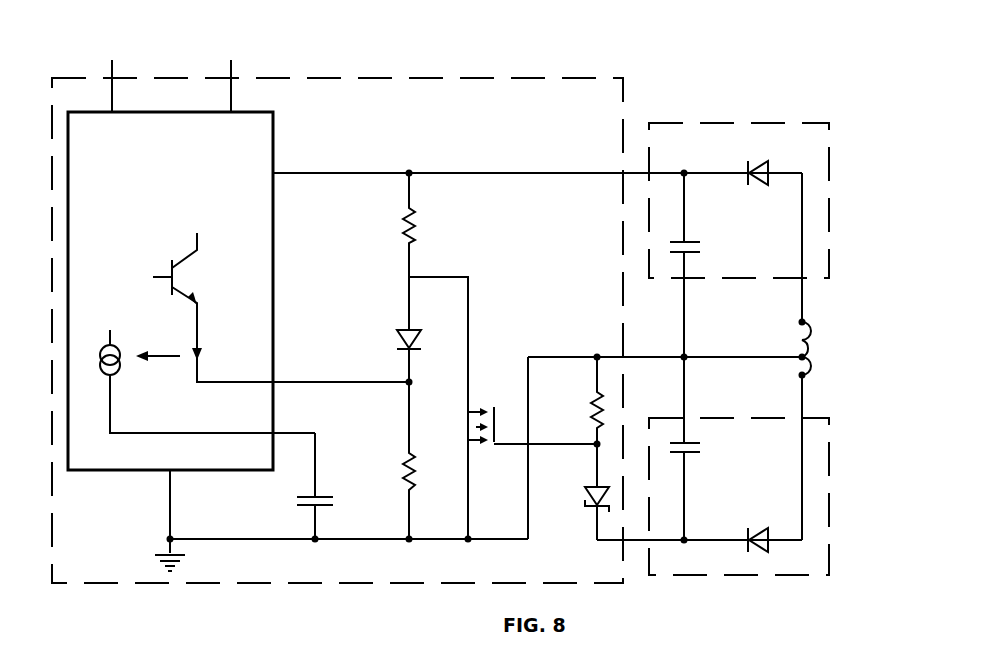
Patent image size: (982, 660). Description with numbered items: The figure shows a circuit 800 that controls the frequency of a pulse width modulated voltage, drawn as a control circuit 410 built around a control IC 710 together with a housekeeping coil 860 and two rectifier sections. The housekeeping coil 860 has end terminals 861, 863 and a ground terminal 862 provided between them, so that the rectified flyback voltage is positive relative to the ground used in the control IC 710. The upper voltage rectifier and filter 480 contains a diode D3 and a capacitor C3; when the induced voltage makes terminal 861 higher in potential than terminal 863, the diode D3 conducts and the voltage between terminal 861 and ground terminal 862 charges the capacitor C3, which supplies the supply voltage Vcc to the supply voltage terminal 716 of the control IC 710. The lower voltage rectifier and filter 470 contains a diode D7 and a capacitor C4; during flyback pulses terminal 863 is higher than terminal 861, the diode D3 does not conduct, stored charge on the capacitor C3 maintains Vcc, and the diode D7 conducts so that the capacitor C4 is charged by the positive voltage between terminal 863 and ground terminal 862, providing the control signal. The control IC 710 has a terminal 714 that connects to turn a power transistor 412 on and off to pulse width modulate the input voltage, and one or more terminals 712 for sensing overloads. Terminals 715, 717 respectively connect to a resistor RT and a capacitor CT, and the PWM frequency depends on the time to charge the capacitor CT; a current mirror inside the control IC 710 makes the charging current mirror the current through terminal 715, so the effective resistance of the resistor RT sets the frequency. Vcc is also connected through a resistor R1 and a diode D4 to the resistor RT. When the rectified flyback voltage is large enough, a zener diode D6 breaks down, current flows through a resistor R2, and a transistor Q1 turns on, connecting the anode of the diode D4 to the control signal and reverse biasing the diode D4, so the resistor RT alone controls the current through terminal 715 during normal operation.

The circuit 800 is at (366, 590).
The control circuit 410 is at (622, 85).
The transistor 412 is at (257, 73).
The control integrated circuit 710 is at (135, 228).
The terminals for sensing overloads 712 is at (126, 112).
The terminal 714 is at (233, 110).
The terminal 715 is at (273, 383).
The supply voltage terminal 716 is at (273, 173).
The terminal 717 is at (273, 433).
The voltage rectifier and filter 480 is at (758, 127).
The voltage rectifier and filter 470 is at (828, 480).
The housekeeping coil 860 is at (823, 365).
The end terminal 861 is at (800, 322).
The ground terminal 862 is at (800, 356).
The end terminal 863 is at (800, 376).
The resistor R1 is at (402, 222).
The diode D4 is at (398, 343).
The resistor RT is at (402, 465).
The capacitor CT is at (302, 508).
The transistor Q1 is at (493, 402).
The resistor R2 is at (589, 404).
The zener diode D6 is at (581, 496).
The diode D3 is at (755, 187).
The capacitor C3 is at (700, 252).
The capacitor C4 is at (700, 453).
The diode D7 is at (760, 527).